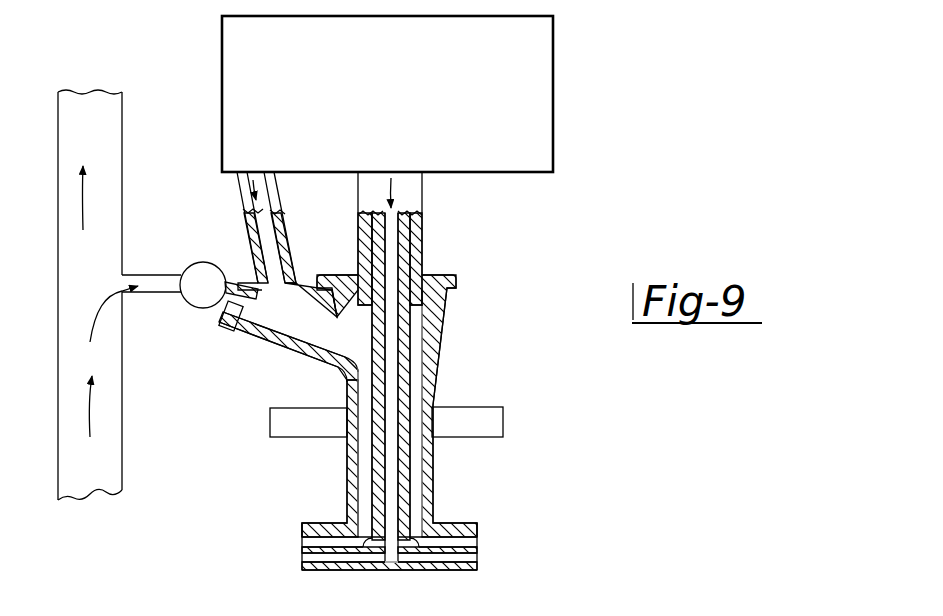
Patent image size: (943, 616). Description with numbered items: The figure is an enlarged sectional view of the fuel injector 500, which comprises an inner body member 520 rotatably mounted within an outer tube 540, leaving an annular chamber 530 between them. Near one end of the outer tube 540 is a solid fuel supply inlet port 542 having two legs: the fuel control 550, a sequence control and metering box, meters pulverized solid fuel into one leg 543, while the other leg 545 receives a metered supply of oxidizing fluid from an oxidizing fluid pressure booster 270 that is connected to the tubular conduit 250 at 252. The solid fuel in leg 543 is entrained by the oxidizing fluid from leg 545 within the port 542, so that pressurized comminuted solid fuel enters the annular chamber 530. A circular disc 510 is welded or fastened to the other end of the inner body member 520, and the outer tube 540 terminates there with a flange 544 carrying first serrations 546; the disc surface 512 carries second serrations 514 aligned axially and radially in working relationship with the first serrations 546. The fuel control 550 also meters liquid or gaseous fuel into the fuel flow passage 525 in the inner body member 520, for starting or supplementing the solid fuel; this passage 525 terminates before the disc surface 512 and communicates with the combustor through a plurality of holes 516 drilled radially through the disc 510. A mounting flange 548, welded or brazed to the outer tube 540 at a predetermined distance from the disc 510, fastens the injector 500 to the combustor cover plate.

The fuel control 550 is at (556, 98).
The tubular conduit 250 is at (122, 462).
The connection to tubular conduit 252 is at (120, 283).
The oxidizing fluid pressure booster 270 is at (192, 302).
The leg of fuel supply inlet port 543 is at (275, 258).
The other leg of fuel supply inlet port 545 is at (232, 320).
The solid fuel supply inlet port 542 is at (330, 343).
The outer tube 540 is at (455, 322).
The inner body member 520 is at (403, 498).
The fuel injector 500 is at (438, 370).
The annular chamber 530 is at (415, 470).
The mounting flange 548 is at (502, 417).
The flange 544 is at (473, 527).
The first serrations 546 is at (477, 540).
The second serrations 514 is at (477, 548).
The circular disc 510 is at (477, 553).
The holes 516 is at (477, 562).
The disc surface 512 is at (362, 566).
The fuel flow passage 525 is at (391, 553).